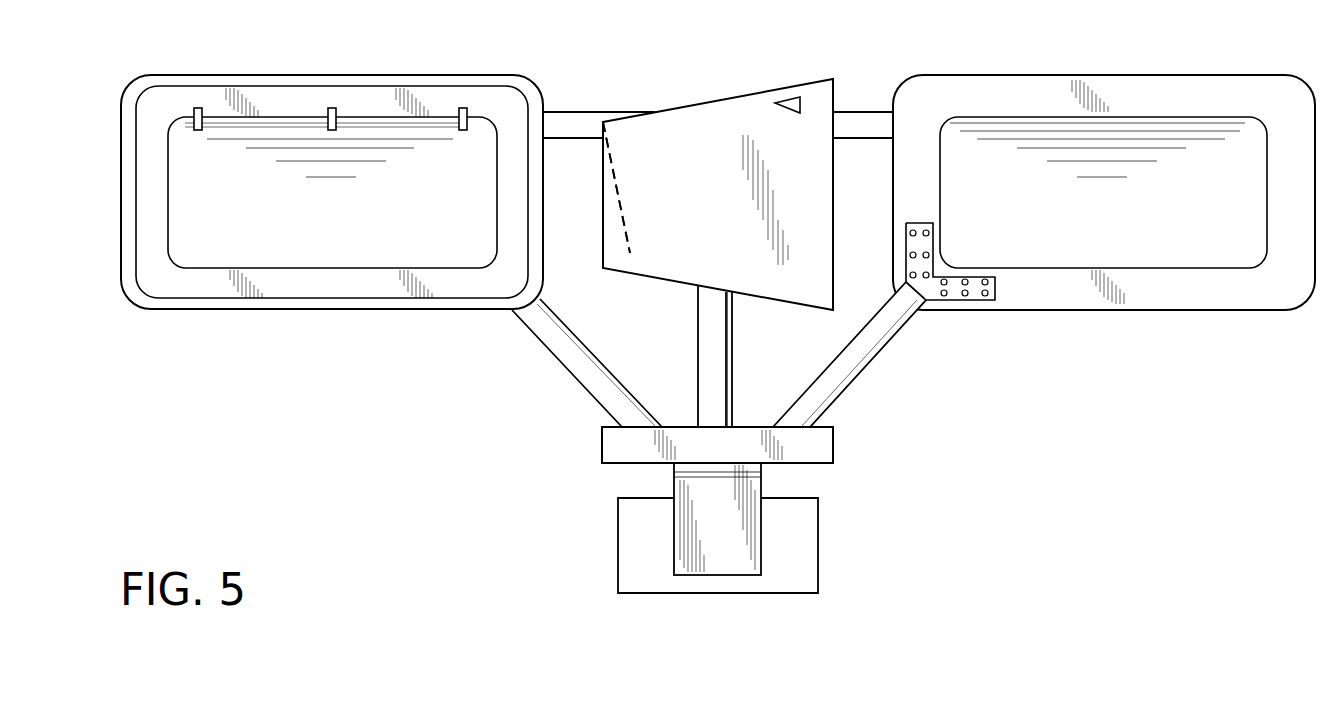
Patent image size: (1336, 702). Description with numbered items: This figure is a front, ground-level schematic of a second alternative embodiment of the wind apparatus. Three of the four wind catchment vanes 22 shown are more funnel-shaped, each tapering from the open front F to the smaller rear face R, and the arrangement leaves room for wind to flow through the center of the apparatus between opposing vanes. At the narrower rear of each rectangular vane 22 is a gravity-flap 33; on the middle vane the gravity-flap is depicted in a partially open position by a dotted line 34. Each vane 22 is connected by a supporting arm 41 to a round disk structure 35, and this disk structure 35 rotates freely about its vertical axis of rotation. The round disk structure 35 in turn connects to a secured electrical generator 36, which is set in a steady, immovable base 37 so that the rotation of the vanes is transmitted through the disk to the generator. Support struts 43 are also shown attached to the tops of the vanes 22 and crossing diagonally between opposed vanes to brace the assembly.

The wind catchment vane 22 is at (272, 75).
The gravity-flap 33 is at (347, 212).
The partially open dotted line 34 is at (618, 258).
The round disk structure 35 is at (833, 445).
The electrical generator 36 is at (762, 485).
The base 37 is at (818, 543).
The supporting arm 41 is at (587, 390).
The support strut 43 is at (563, 112).
The rear face R is at (437, 97).
The open front F is at (788, 98).